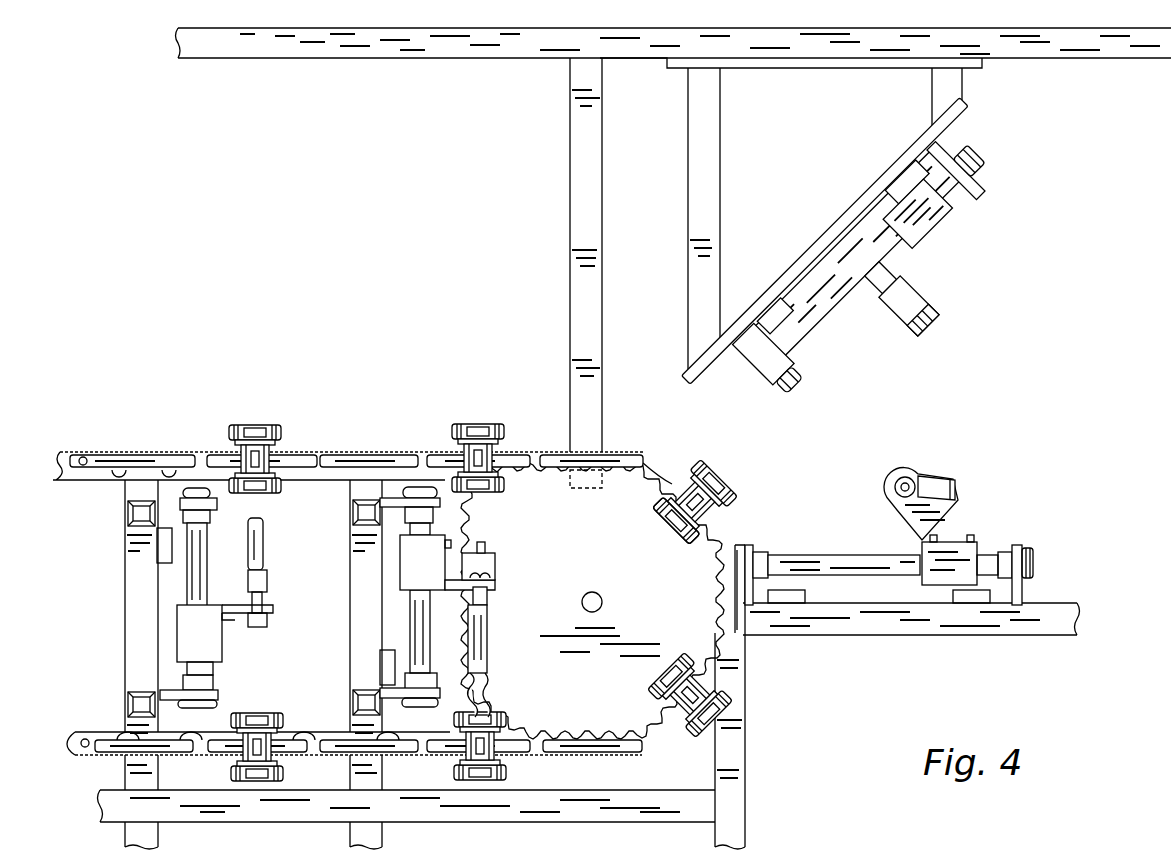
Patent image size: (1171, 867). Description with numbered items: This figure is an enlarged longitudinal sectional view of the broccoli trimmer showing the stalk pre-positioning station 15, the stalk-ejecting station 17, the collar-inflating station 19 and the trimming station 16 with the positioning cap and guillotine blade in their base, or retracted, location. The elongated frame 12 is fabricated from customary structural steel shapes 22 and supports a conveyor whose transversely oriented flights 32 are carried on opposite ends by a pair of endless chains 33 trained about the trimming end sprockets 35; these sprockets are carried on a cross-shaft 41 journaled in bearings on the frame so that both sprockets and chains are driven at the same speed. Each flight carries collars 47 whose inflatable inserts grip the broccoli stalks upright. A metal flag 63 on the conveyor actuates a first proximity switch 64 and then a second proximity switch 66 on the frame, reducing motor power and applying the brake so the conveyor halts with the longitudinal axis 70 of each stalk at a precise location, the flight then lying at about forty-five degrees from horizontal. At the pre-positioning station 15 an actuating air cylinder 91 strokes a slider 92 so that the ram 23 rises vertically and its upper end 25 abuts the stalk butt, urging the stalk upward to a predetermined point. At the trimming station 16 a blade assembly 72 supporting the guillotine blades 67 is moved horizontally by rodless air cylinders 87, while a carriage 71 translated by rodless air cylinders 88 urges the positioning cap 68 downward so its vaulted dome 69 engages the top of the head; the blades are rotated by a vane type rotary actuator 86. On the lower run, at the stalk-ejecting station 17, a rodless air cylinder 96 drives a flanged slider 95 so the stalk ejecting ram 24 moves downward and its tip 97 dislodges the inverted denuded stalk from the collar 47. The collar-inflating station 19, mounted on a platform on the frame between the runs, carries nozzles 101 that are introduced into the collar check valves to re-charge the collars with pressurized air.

The elongated frame 12 is at (125, 553).
The stalk pre-positioning station 15 is at (291, 564).
The trimming station 16 is at (905, 306).
The stalk-ejecting station 17 is at (519, 652).
The collar-inflating station 19 is at (507, 560).
The structural steel shapes 22 is at (435, 822).
The ram 23 is at (258, 535).
The stalk ejecting ram 24 is at (478, 643).
The upper end of ram 25 is at (257, 517).
The flights 32 is at (437, 452).
The endless chains 33 is at (642, 732).
The trimming end sprockets 35 is at (592, 601).
The cross-shaft 41 is at (600, 607).
The collar 47 is at (250, 425).
The flag 63 is at (280, 472).
The first proximity switch 64 is at (578, 490).
The second proximity switch 66 is at (667, 523).
The guillotine blades 67 is at (950, 485).
The positioning cap 68 is at (937, 312).
The vaulted dome 69 is at (907, 313).
The longitudinal axis of stalk 70 is at (917, 483).
The carriage 71 is at (942, 237).
The blade assembly 72 is at (957, 528).
The rotary actuators 86 is at (952, 480).
The rodless air cylinders 87 is at (889, 512).
The rodless air cylinders 88 is at (808, 348).
The actuating air cylinder 91 is at (200, 568).
The slider 92 is at (300, 608).
The flanged slider 95 is at (538, 598).
The rodless air cylinder 96 is at (417, 627).
The tip of ram 97 is at (485, 682).
The nozzles 101 is at (483, 540).